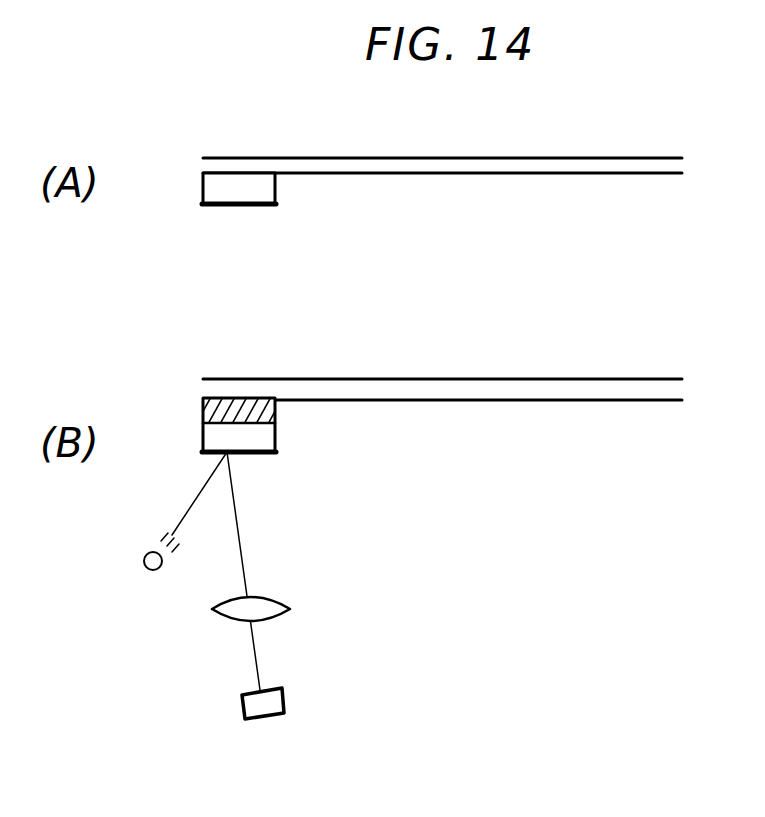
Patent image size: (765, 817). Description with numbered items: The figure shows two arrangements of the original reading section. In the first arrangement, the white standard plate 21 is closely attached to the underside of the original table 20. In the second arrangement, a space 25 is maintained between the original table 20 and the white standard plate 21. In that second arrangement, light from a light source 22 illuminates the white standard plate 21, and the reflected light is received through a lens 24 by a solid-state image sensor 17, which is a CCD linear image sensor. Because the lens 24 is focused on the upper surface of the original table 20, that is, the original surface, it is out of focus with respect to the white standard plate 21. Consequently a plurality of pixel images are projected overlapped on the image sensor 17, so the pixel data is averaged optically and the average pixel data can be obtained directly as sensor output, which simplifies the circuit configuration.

In FIG. 14A, the original table 20 is at (585, 158).
In FIG. 14B, the original table 20 is at (575, 380).
In FIG. 14A, the white standard plate 21 is at (202, 186).
In FIG. 14B, the white standard plate 21 is at (203, 440).
In FIG. 14B, the space 25 is at (203, 414).
In FIG. 14B, the light source 22 is at (152, 584).
In FIG. 14B, the lens 24 is at (290, 609).
In FIG. 14B, the solid-state image sensor 17 is at (284, 700).